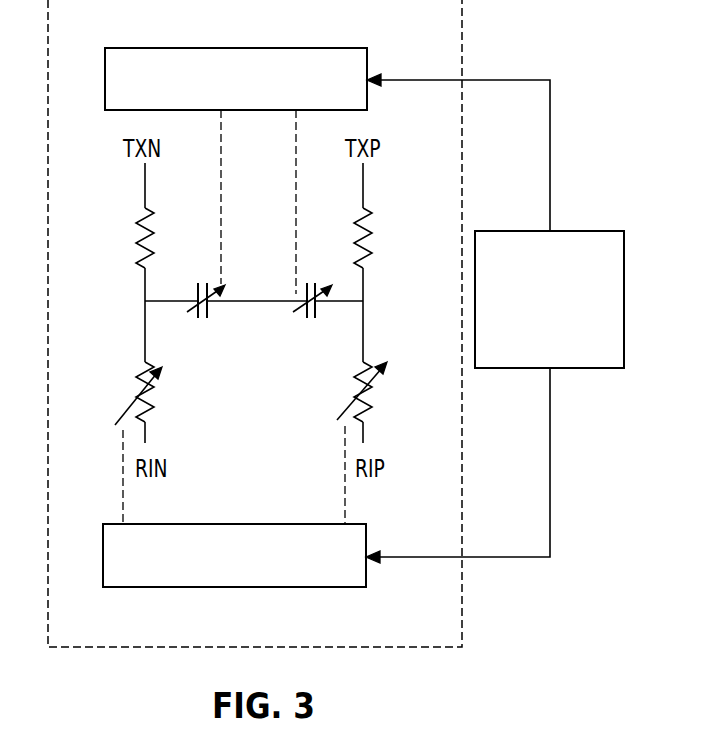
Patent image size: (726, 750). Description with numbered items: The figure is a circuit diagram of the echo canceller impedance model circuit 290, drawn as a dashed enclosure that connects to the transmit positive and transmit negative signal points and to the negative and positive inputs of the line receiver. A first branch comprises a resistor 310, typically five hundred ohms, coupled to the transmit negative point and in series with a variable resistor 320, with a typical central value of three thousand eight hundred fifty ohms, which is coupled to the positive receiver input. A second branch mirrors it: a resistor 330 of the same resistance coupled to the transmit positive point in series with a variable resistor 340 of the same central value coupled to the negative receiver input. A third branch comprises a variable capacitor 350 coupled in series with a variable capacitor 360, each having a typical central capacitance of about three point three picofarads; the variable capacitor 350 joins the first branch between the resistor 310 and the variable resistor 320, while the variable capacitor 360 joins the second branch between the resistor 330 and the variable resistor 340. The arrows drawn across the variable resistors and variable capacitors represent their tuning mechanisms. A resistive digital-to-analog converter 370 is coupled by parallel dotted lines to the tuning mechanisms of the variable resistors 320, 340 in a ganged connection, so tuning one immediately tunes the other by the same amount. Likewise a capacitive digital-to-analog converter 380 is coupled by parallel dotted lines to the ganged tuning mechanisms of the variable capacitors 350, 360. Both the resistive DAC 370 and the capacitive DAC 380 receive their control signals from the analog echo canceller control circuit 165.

The model circuit 290 is at (463, 43).
The capacitive digital-to-analog converter 380 is at (286, 48).
The resistive digital-to-analog converter 370 is at (283, 588).
The analog echo canceller control circuit 165 is at (590, 231).
The resistor 310 is at (140, 226).
The resistor 330 is at (370, 234).
The variable resistor 320 is at (138, 378).
The variable resistor 340 is at (370, 405).
The variable capacitor 350 is at (212, 312).
The variable capacitor 360 is at (317, 312).